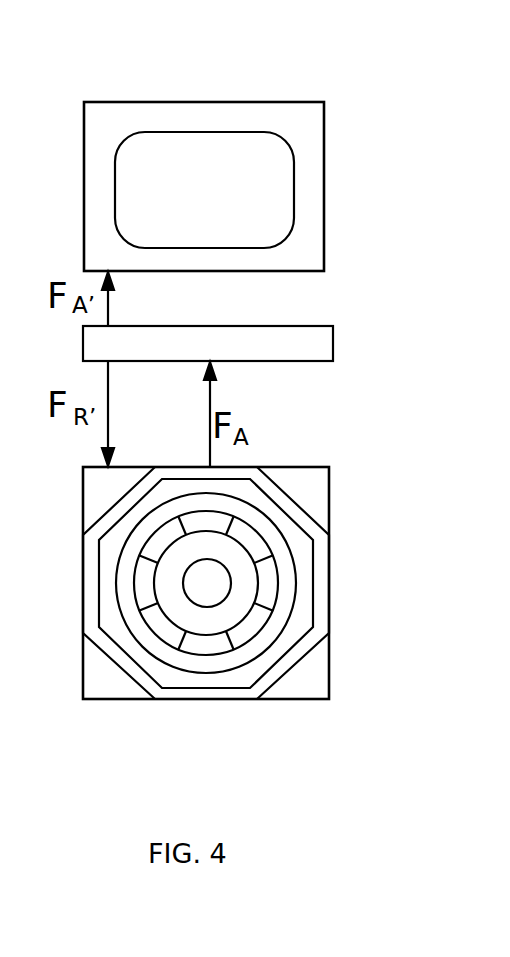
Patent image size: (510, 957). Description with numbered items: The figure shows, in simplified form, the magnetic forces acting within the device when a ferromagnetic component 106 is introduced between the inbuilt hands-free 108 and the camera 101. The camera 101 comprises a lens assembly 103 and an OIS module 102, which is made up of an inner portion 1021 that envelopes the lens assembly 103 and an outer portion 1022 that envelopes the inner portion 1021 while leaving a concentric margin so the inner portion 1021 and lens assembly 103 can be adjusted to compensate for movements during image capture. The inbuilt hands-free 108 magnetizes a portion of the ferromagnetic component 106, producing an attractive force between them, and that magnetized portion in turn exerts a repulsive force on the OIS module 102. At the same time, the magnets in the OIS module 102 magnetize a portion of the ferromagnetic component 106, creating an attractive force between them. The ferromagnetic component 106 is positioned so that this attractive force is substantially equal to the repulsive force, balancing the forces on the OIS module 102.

The inbuilt hands-free 108 is at (172, 100).
The ferromagnetic component 106 is at (334, 345).
The camera 101 is at (206, 637).
The OIS module 102 is at (214, 650).
The inner portion 1021 is at (206, 639).
The outer portion 1022 is at (273, 642).
The lens assembly 103 is at (193, 583).